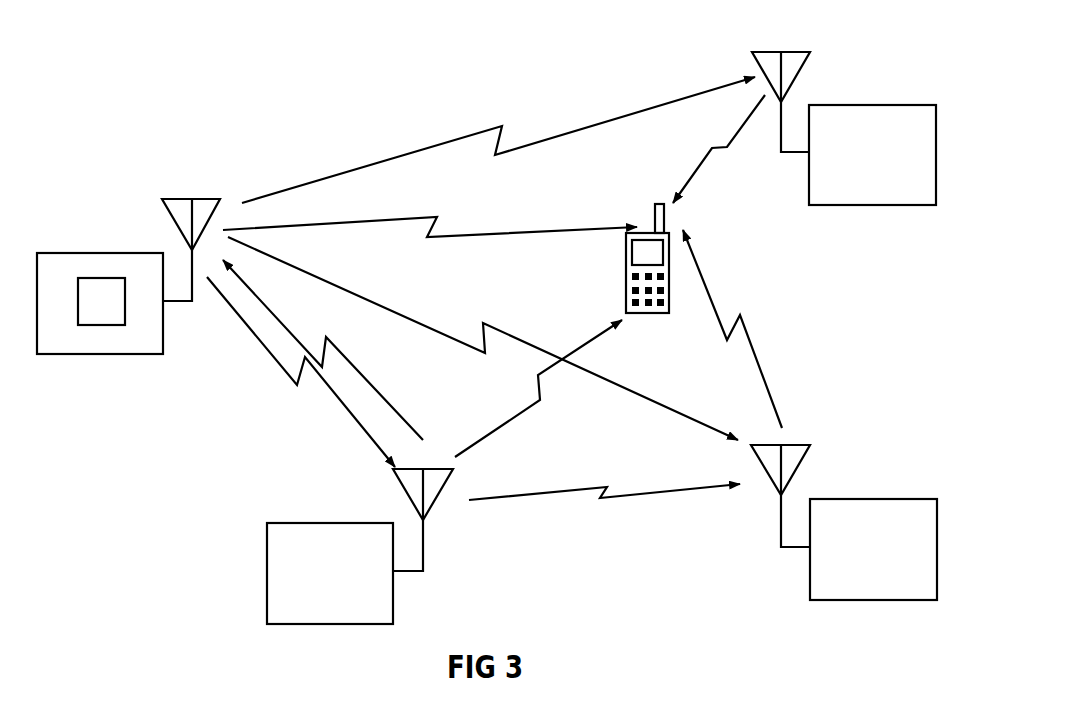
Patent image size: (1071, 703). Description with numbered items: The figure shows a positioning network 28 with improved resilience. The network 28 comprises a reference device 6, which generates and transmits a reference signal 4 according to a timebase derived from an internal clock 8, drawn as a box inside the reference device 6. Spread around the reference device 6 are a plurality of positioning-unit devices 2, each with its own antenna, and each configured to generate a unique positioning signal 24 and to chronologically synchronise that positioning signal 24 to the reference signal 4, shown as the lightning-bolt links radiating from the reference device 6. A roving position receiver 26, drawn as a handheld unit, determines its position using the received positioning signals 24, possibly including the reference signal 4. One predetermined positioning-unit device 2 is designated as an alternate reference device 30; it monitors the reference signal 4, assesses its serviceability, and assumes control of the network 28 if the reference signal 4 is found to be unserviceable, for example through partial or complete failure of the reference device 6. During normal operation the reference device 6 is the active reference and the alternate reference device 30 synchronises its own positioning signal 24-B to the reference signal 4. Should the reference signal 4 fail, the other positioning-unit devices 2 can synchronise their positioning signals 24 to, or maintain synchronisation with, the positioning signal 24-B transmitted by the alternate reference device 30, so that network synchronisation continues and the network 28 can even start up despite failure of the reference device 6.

The positioning-unit device 2 is at (901, 206).
The reference signal 4 is at (560, 135).
The reference device 6 is at (102, 355).
The internal clock 8 is at (101, 301).
The positioning signal 24 is at (693, 185).
The positioning signal of the alternate reference device 24-B is at (392, 405).
The roving position receiver 26 is at (626, 270).
The positioning network 28 is at (261, 106).
The alternate reference device 30 is at (315, 523).